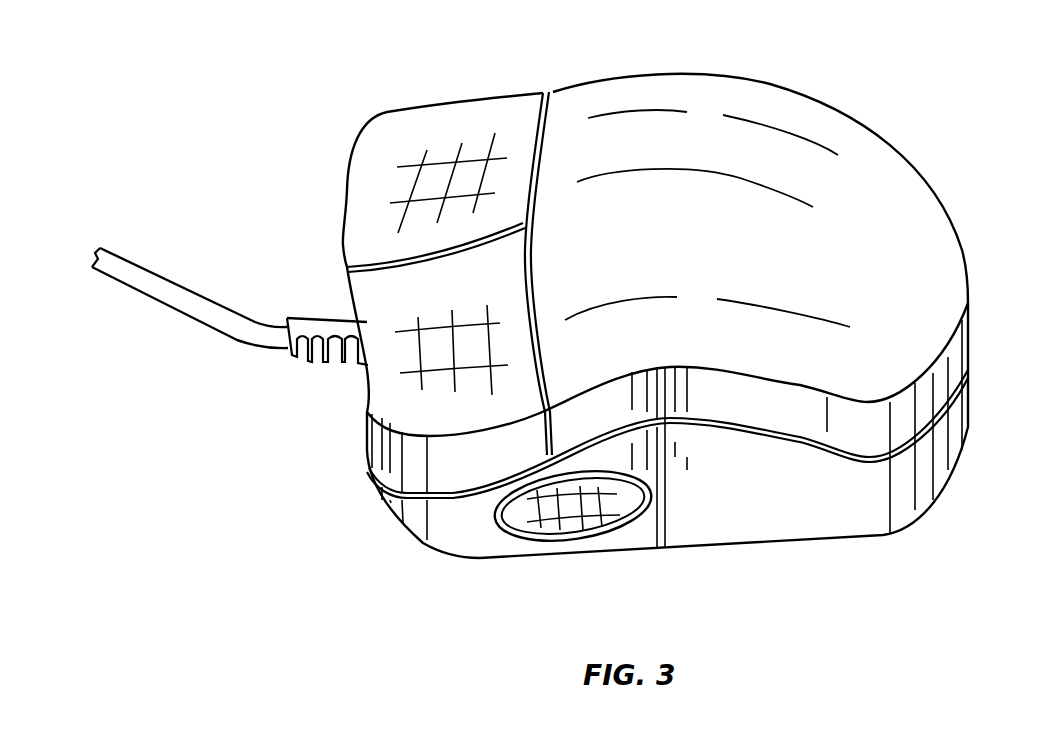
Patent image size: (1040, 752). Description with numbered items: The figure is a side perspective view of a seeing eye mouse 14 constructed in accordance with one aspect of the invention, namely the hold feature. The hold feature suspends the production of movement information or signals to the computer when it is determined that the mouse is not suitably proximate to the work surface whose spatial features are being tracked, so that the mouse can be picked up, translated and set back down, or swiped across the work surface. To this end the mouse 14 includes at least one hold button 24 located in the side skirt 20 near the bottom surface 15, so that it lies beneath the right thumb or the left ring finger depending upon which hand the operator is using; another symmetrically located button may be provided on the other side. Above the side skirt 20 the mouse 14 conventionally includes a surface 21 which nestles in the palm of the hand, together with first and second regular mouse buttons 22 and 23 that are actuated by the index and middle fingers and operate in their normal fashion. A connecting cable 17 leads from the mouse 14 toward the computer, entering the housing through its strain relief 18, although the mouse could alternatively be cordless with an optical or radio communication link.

The mouse 14 is at (923, 53).
The bottom surface 15 is at (845, 485).
The connecting cable 17 is at (233, 340).
The strain relief 18 is at (327, 367).
The side skirt 20 is at (946, 453).
The surface 21 is at (889, 212).
The first regular mouse button 22 is at (468, 122).
The second regular mouse button 23 is at (397, 393).
The hold button 24 is at (595, 527).